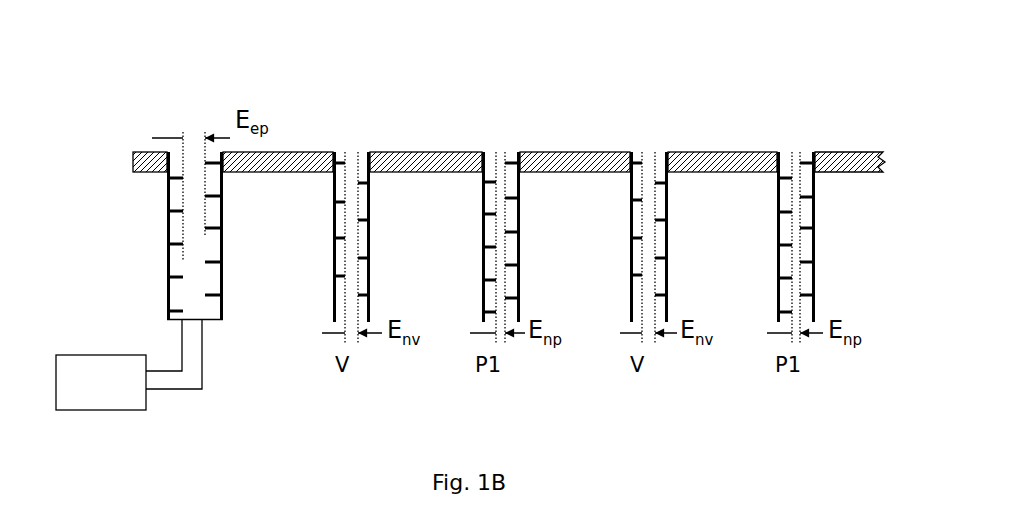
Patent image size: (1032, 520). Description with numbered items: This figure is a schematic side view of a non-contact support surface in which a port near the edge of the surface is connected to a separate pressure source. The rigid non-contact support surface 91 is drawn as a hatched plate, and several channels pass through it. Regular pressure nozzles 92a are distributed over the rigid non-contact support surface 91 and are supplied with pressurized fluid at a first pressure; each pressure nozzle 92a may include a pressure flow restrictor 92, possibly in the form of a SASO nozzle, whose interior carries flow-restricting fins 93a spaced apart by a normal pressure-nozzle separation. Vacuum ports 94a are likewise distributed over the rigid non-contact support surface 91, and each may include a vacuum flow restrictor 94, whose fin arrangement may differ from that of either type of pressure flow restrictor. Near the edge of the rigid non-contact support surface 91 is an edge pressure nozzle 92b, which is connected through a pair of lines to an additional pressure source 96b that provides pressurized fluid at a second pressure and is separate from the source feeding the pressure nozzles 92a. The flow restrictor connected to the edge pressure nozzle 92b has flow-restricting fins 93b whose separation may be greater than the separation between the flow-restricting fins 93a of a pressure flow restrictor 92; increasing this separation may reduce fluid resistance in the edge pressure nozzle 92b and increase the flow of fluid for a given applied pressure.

The rigid non-contact support surface 91 is at (853, 152).
The pressure flow restrictor 92 is at (808, 210).
The pressure nozzle 92a is at (508, 157).
The edge pressure nozzle 92b is at (194, 152).
The flow-restricting fins 93a is at (806, 232).
The flow-restricting fins 93b is at (205, 228).
The vacuum flow restrictor 94 is at (657, 238).
The vacuum port 94a is at (648, 150).
The additional pressure source 96b is at (75, 360).